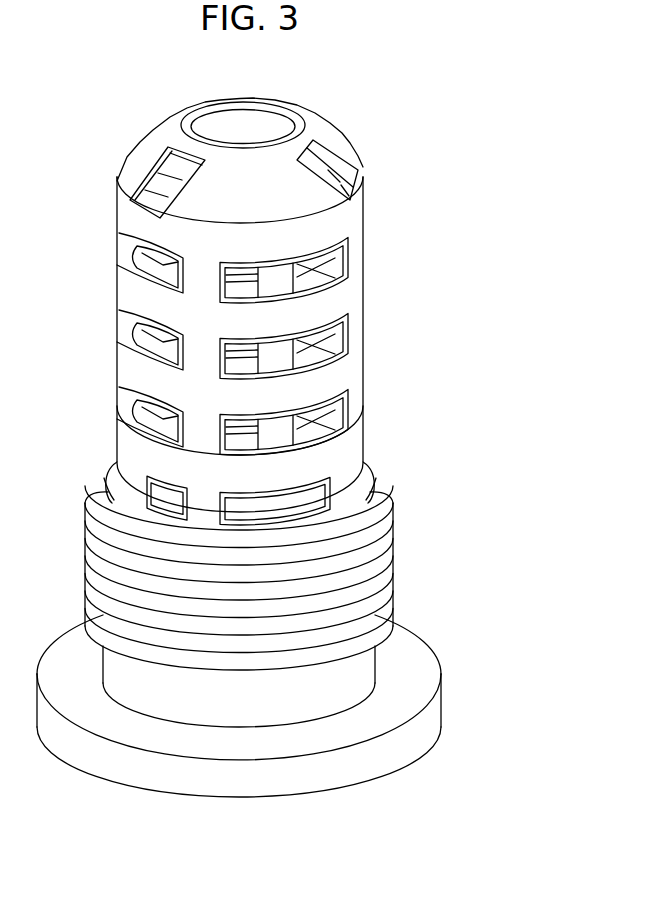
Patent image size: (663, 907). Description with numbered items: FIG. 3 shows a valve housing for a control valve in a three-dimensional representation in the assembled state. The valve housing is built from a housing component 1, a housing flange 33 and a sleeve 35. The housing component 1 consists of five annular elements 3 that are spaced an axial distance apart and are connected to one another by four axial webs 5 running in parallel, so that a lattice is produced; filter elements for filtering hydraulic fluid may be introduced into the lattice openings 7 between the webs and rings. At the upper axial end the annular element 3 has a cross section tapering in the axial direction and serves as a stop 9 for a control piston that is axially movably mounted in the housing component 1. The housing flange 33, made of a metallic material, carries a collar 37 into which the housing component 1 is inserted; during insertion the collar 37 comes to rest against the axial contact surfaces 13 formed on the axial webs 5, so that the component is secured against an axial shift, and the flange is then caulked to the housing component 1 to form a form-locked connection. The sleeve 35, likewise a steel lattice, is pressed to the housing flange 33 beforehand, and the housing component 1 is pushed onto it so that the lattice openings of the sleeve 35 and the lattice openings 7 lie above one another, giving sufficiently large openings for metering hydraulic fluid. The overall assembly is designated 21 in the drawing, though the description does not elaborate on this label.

The housing component 1 is at (357, 97).
The filter insert 21 is at (412, 192).
The annular element 3 is at (133, 292).
The axial web 5 is at (197, 357).
The lattice opening 7 is at (125, 240).
The stop 9 is at (306, 128).
The axial contact surface 13 is at (120, 473).
The housing flange 33 is at (415, 673).
The sleeve 35 is at (333, 332).
The collar 37 is at (370, 502).